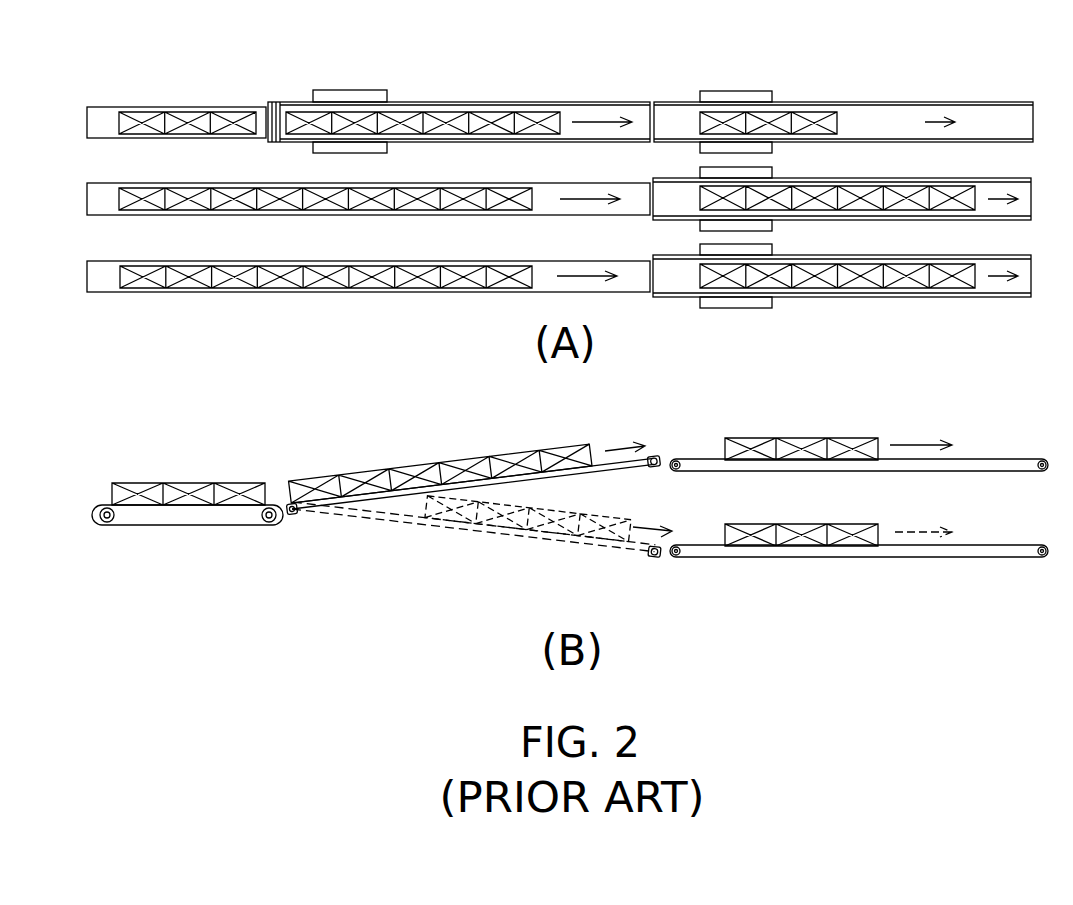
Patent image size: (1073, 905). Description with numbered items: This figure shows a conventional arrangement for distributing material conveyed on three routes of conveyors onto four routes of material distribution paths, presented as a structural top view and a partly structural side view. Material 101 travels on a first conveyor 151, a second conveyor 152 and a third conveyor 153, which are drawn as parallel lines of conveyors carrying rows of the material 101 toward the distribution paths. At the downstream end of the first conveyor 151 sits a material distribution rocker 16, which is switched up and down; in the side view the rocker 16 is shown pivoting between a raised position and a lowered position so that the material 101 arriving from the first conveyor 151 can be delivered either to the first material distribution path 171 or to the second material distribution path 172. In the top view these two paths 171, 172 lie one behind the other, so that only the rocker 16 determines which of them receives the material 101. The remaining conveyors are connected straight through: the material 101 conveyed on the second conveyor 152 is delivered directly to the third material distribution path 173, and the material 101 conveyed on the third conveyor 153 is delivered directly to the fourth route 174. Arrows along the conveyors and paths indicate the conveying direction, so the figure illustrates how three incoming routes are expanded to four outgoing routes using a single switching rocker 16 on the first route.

The material distribution rocker 16 is at (596, 110).
The material 101 is at (190, 128).
The first conveyor 151 is at (100, 125).
The second conveyor 152 is at (100, 200).
The third conveyor 153 is at (100, 280).
The first material distribution path 171 is at (998, 93).
The second material distribution path 172 is at (1011, 552).
The third material distribution path 173 is at (990, 196).
The fourth route 174 is at (990, 272).